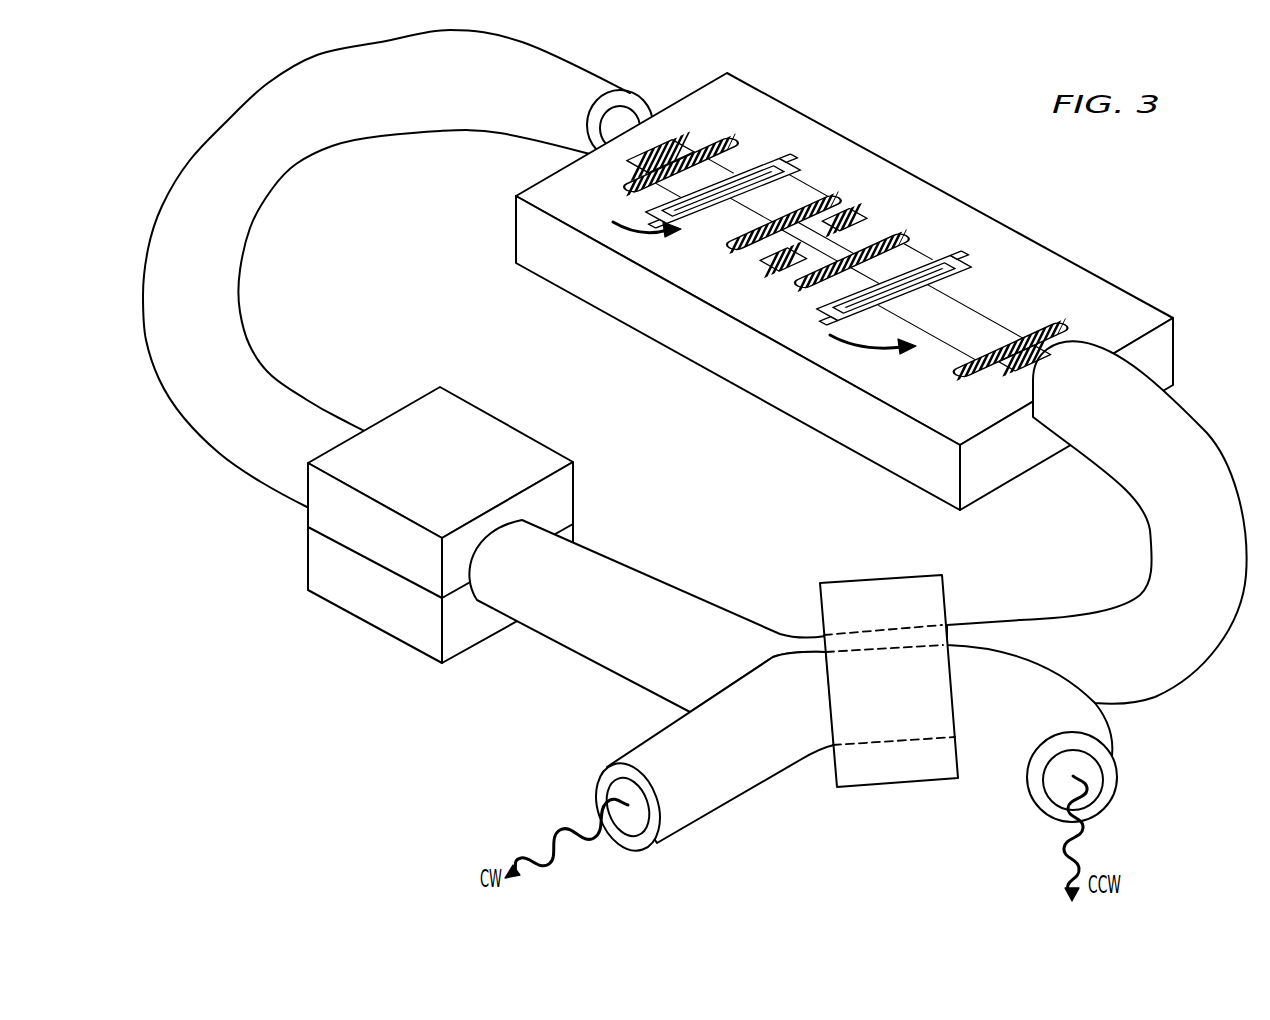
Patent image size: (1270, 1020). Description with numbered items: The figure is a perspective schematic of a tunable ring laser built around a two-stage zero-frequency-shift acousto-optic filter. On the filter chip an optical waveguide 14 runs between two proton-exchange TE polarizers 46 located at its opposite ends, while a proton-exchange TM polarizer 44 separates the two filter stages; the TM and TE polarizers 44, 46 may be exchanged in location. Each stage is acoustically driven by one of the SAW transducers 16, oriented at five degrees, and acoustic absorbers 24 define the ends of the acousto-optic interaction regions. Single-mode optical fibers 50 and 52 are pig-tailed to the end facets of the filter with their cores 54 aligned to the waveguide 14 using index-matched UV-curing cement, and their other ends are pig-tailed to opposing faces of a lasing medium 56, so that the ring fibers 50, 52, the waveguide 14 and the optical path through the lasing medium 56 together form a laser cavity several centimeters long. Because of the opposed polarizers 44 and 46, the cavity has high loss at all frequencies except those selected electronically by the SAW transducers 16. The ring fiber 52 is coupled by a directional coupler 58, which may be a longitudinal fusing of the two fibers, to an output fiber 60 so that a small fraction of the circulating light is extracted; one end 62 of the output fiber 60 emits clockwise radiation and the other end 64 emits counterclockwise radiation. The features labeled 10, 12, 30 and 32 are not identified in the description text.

The integrated optic modulator chip 10 is at (620, 294).
The substrate 12 is at (1012, 250).
The optical waveguide 14 is at (773, 177).
The SAW transducers 16 is at (768, 205).
The acoustic absorbers 24 is at (674, 314).
The clockwise propagation direction 30 is at (635, 222).
The counterclockwise propagation direction 32 is at (862, 337).
The proton-exchange TM polarizer 44 is at (815, 239).
The proton-exchange TE polarizers 46 is at (620, 163).
The single-mode optical fiber 50 is at (203, 153).
The single-mode optical fiber 52 is at (1205, 440).
The fiber core 54 is at (630, 117).
The lasing medium 56 is at (470, 427).
The directional coupler 58 is at (907, 758).
The output fiber 60 is at (750, 773).
The end of output fiber 62 is at (610, 777).
The end of output fiber 64 is at (1113, 787).